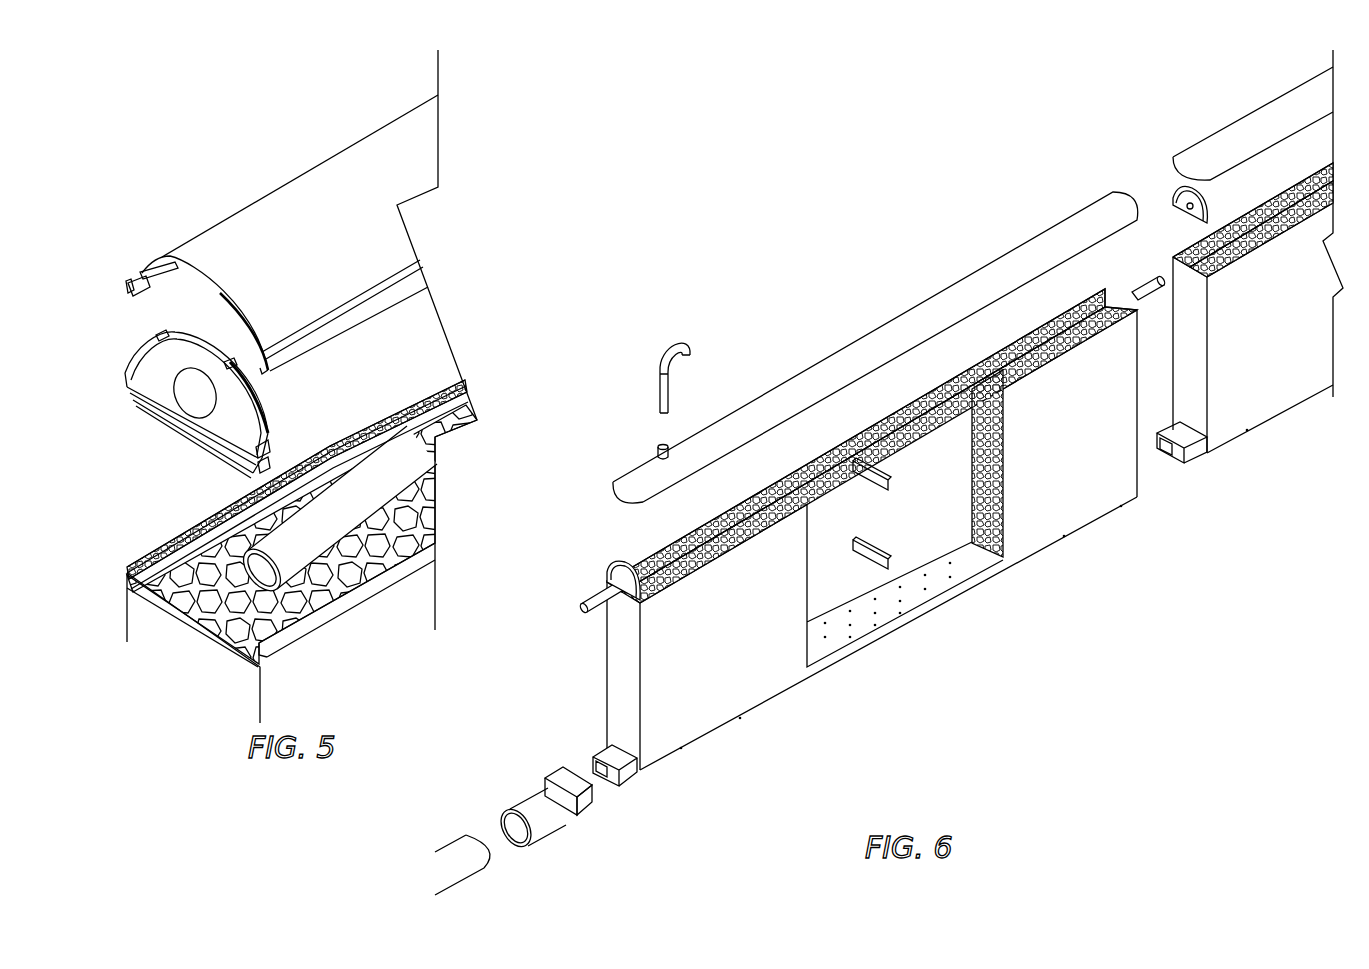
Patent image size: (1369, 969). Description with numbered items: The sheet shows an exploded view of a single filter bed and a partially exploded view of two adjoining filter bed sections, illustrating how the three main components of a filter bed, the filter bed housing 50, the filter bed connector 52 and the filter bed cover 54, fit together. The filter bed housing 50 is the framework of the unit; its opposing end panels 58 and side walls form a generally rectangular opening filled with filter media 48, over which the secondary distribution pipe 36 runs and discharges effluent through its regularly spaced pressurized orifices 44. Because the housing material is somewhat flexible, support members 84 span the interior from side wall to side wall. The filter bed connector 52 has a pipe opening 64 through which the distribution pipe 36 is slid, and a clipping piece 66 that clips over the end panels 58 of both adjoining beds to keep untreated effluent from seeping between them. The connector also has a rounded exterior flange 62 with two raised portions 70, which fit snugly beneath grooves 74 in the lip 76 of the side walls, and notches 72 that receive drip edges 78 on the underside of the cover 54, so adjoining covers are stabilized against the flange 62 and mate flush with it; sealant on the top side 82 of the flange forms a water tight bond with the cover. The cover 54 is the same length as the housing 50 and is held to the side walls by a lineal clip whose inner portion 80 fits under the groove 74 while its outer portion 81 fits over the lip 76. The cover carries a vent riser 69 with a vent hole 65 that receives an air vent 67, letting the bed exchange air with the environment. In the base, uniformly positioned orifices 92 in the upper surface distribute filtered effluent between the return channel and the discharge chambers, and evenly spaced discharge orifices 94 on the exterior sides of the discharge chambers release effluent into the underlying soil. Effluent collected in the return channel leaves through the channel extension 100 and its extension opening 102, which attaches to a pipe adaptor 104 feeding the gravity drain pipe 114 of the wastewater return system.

In FIG. 5, the secondary distribution pipe 36 is at (397, 457).
In FIG. 6, the secondary distribution pipe 36 is at (597, 597).
In FIG. 5, the pressurized orifice 44 is at (397, 490).
In FIG. 6, the pressurized orifice 44 is at (807, 482).
In FIG. 5, the filter media 48 is at (235, 535).
In FIG. 6, the filter media 48 is at (697, 537).
In FIG. 5, the filter bed housing 50 is at (122, 617).
In FIG. 6, the filter bed housing 50 is at (1063, 450).
In FIG. 5, the filter bed connector 52 is at (153, 407).
In FIG. 6, the filter bed connector 52 is at (620, 578).
In FIG. 5, the filter bed cover 54 is at (222, 235).
In FIG. 6, the filter bed cover 54 is at (890, 313).
In FIG. 6, the end panel 58 is at (620, 675).
In FIG. 5, the rounded exterior flange 62 is at (140, 348).
In FIG. 5, the pipe opening 64 is at (193, 400).
In FIG. 6, the vent hole 65 is at (668, 440).
In FIG. 5, the clipping piece 66 is at (240, 464).
In FIG. 6, the air vent 67 is at (680, 343).
In FIG. 6, the vent riser 69 is at (660, 447).
In FIG. 5, the raised portion 70 is at (264, 440).
In FIG. 5, the notch 72 is at (160, 333).
In FIG. 5, the groove 74 is at (151, 603).
In FIG. 5, the lip 76 is at (281, 644).
In FIG. 5, the drip edge 78 is at (172, 268).
In FIG. 5, the inner portion 80 is at (148, 290).
In FIG. 5, the outer portion 81 is at (132, 285).
In FIG. 5, the top side 82 is at (255, 412).
In FIG. 6, the support member 84 is at (862, 473).
In FIG. 6, the orifice 92 is at (842, 610).
In FIG. 6, the discharge orifice 94 is at (737, 717).
In FIG. 6, the channel extension 100 is at (627, 781).
In FIG. 6, the extension opening 102 is at (606, 766).
In FIG. 6, the pipe adaptor 104 is at (560, 826).
In FIG. 6, the gravity drain pipe 114 is at (473, 874).